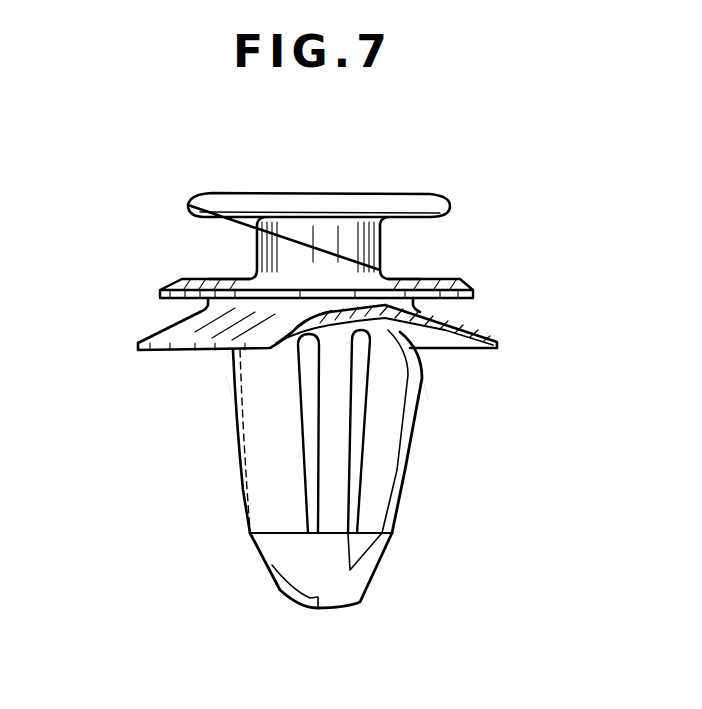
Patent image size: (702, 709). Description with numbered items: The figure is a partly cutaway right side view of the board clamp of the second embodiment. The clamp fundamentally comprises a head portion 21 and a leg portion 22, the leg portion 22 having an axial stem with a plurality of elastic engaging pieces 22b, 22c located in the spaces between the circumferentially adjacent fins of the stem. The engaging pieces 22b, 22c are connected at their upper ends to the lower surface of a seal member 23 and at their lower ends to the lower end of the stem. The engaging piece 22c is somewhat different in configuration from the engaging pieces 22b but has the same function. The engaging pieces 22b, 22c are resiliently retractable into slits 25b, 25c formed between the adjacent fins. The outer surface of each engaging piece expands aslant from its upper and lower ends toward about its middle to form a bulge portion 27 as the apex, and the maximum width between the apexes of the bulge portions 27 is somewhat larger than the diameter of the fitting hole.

The head portion 21 is at (410, 192).
The leg portion 22 is at (272, 588).
The elastic engaging piece 22b is at (255, 450).
The elastic engaging piece 22c is at (375, 500).
The seal member 23 is at (468, 326).
The slit 25b is at (312, 483).
The slit 25c is at (358, 438).
The bulge portion 27 is at (227, 393).